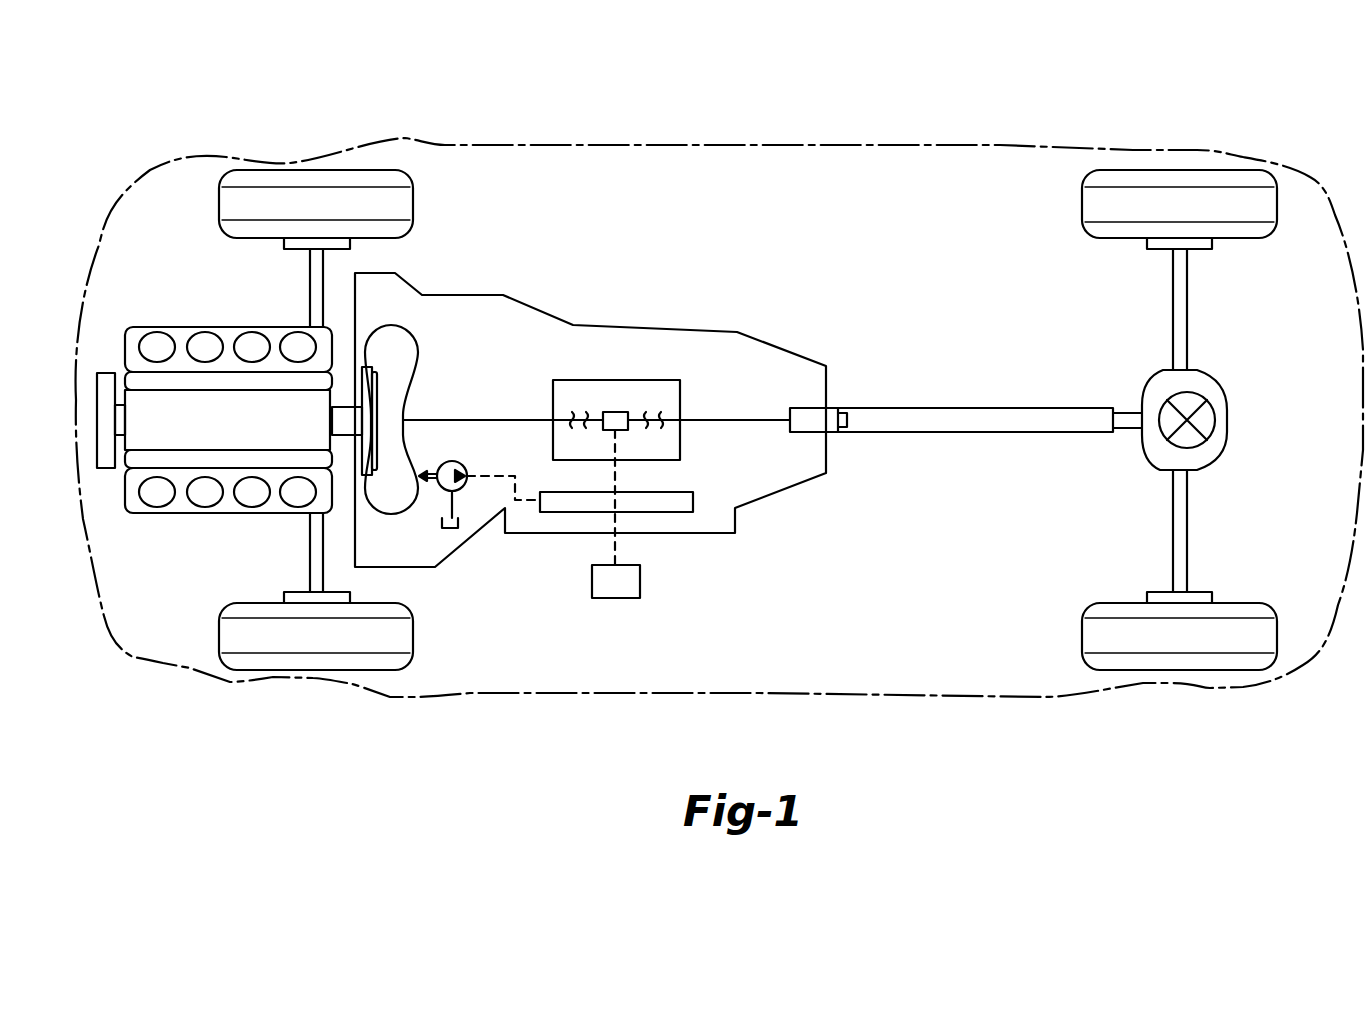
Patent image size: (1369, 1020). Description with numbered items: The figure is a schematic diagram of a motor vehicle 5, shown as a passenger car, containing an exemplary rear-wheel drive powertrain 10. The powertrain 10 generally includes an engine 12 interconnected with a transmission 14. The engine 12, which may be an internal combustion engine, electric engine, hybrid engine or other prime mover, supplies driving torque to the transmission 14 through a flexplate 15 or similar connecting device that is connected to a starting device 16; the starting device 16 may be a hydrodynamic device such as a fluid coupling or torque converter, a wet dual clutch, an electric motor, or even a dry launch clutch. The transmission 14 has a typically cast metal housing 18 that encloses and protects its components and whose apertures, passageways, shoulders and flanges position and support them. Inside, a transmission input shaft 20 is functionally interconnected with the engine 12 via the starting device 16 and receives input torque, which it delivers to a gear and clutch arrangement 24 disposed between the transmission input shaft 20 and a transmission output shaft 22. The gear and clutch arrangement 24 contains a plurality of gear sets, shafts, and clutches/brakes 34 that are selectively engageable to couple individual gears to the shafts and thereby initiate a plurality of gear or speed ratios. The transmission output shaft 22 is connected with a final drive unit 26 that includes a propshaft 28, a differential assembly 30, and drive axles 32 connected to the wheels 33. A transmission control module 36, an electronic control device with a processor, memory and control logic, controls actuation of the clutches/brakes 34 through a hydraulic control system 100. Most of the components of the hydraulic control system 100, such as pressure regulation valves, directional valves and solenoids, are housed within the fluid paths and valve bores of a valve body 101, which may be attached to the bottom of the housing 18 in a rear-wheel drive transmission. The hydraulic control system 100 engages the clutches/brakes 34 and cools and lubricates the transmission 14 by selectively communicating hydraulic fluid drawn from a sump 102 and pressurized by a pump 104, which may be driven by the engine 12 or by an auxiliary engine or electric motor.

The motor vehicle 5 is at (725, 143).
The powertrain 10 is at (773, 236).
The engine 12 is at (204, 426).
The transmission 14 is at (710, 296).
The flexplate 15 is at (362, 390).
The starting device 16 is at (413, 345).
The housing 18 is at (805, 362).
The transmission input shaft 20 is at (525, 418).
The transmission output shaft 22 is at (742, 420).
The gear and clutch arrangement 24 is at (573, 380).
The final drive unit 26 is at (1009, 326).
The propshaft 28 is at (975, 408).
The differential assembly 30 is at (1227, 420).
The drive axles 32 is at (1187, 340).
The wheels 33 is at (1237, 240).
The clutches/brakes 34 is at (615, 412).
The transmission control module 36 is at (617, 598).
The hydraulic control system 100 is at (683, 505).
The valve body 101 is at (545, 491).
The sump 102 is at (452, 528).
The pump 104 is at (468, 468).